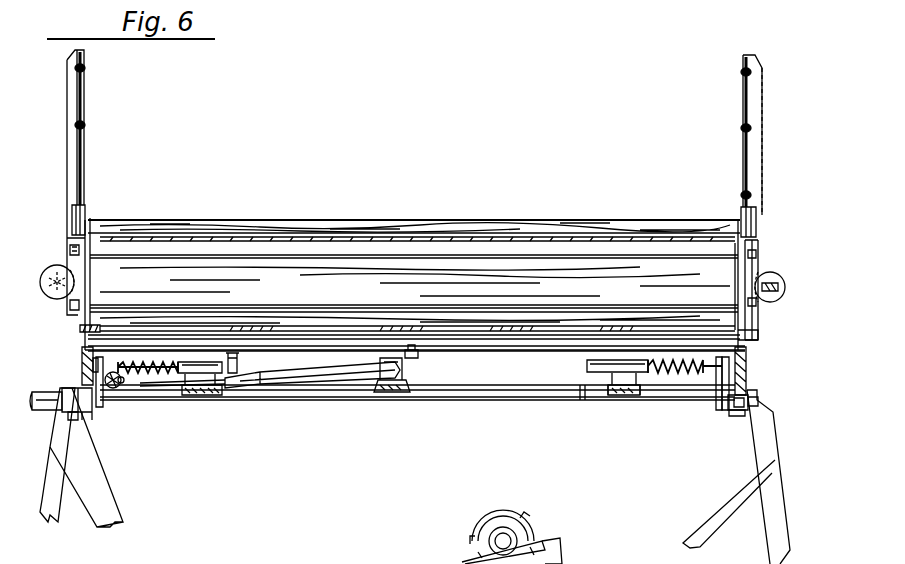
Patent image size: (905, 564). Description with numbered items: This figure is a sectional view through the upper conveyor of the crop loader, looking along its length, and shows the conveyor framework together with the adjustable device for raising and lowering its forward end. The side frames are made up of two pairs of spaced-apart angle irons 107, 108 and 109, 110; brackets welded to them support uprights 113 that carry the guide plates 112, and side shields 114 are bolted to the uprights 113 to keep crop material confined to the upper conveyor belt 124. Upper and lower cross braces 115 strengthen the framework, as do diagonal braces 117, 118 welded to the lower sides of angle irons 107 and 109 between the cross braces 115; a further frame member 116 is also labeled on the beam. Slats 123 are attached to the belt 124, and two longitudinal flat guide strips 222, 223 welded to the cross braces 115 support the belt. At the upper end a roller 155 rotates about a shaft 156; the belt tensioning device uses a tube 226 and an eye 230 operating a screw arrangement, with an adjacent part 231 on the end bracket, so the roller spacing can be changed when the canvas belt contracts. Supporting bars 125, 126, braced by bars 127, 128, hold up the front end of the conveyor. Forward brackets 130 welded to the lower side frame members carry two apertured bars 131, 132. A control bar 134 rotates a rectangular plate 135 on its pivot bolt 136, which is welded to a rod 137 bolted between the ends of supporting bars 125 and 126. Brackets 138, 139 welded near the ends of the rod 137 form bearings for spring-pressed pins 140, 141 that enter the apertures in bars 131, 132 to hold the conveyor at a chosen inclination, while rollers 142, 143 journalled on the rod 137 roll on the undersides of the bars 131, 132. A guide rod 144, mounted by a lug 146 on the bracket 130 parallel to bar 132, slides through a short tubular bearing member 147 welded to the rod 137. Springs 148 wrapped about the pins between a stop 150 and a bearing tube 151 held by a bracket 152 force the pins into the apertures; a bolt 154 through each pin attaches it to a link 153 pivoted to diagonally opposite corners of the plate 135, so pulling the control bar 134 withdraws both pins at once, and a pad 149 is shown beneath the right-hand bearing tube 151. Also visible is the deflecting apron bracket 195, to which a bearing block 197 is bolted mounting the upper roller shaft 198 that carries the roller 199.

The angle iron 107 is at (746, 336).
The angle iron 108 is at (756, 243).
The angle iron 109 is at (80, 327).
The angle iron 110 is at (70, 247).
The guide plate 112 is at (70, 215).
The upright 113 is at (757, 70).
The side shield 114 is at (84, 178).
The cross brace 115 is at (70, 143).
The beam 116 is at (457, 252).
The diagonal brace 117 is at (568, 337).
The diagonal brace 118 is at (243, 332).
The slat 123 is at (240, 300).
The upper conveyor belt 124 is at (355, 310).
The supporting bar 125 is at (762, 530).
The supporting bar 126 is at (56, 514).
The brace bar 127 is at (727, 498).
The brace bar 128 is at (84, 497).
The forward bracket 130 is at (80, 353).
The apertured bar 131 is at (756, 392).
The apertured bar 132 is at (86, 374).
The control bar 134 is at (48, 410).
The rectangular plate 135 is at (388, 382).
The pivot bolt 136 is at (404, 353).
The rod 137 is at (312, 395).
The bracket 138 is at (94, 414).
The bracket 139 is at (732, 410).
The spring pressed pin 140 is at (86, 363).
The spring pressed pin 141 is at (752, 370).
The roller 142 is at (82, 422).
The roller 143 is at (736, 417).
The guide rod 144 is at (115, 388).
The lug 146 is at (138, 374).
The tubular bearing member 147 is at (120, 384).
The spring 148 is at (668, 371).
The pad 149 is at (650, 385).
The stop 150 is at (704, 374).
The bearing tube 151 is at (588, 404).
The bracket 152 is at (210, 385).
The link 153 is at (302, 378).
The bolt 154 is at (592, 362).
The roller 155 is at (520, 275).
The shaft 156 is at (66, 300).
The bracket 195 is at (560, 560).
The bearing block 197 is at (548, 545).
The upper roller shaft 198 is at (506, 538).
The roller 199 is at (532, 526).
The guide strip 222 is at (412, 330).
The guide strip 223 is at (413, 240).
The tube 226 is at (790, 252).
The eye 230 is at (771, 294).
The bracket 231 is at (757, 306).